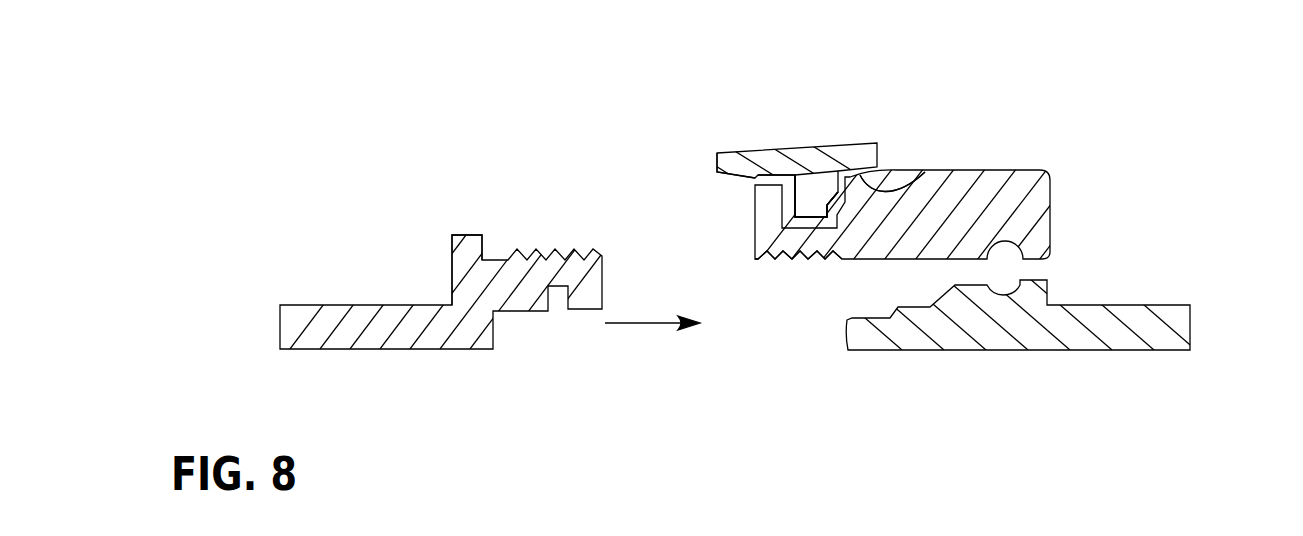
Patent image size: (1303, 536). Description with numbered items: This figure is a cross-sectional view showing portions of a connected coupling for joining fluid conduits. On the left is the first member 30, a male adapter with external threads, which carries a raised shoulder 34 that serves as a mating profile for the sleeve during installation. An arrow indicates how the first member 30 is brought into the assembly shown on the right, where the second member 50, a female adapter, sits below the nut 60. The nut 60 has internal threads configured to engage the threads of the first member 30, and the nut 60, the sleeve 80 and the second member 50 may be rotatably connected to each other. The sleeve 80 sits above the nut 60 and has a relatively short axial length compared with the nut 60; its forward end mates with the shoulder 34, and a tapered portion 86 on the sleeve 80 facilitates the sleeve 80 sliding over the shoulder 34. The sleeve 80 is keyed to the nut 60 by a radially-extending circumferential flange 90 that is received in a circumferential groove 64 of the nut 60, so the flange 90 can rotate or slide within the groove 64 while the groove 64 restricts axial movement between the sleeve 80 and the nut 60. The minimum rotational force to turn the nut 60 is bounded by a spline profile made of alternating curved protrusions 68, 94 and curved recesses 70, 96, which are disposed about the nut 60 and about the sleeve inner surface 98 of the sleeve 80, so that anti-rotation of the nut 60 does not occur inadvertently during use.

The first member 30 is at (292, 306).
The shoulder 34 is at (463, 237).
The second member 50 is at (1172, 304).
The nut 60 is at (1055, 216).
The circumferential groove 64 is at (786, 258).
The curved protrusions 68 is at (883, 188).
The curved recesses 70 is at (892, 182).
The sleeve 80 is at (790, 148).
The tapered portion 86 is at (735, 158).
The circumferential flange 90 is at (810, 202).
The curved protrusions 94 is at (810, 203).
The curved recesses 96 is at (816, 196).
The sleeve inner surface 98 is at (816, 196).